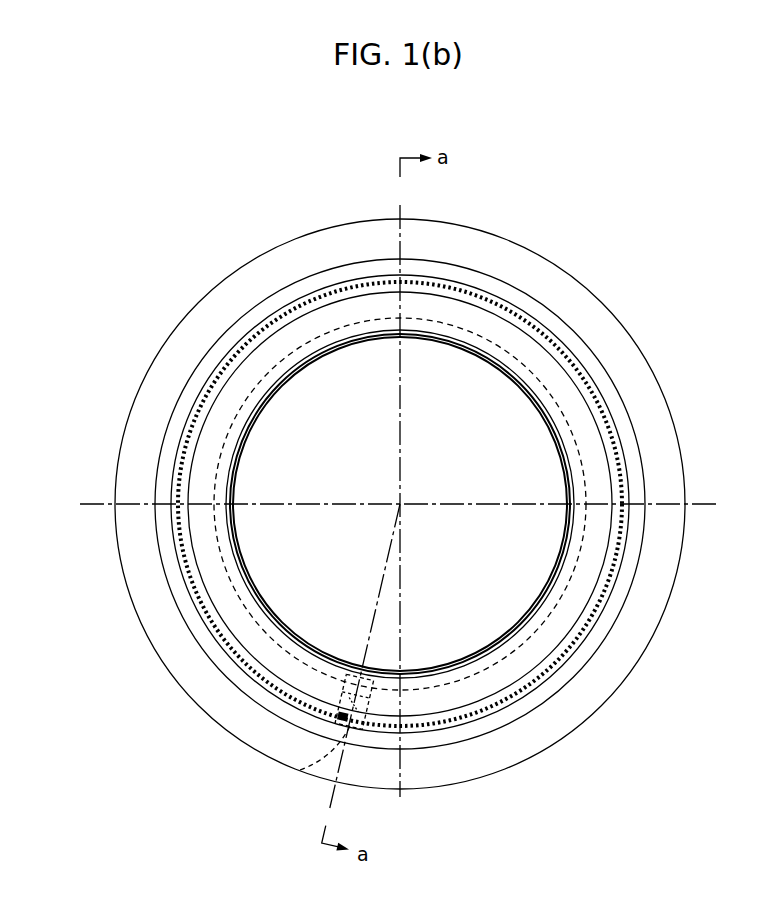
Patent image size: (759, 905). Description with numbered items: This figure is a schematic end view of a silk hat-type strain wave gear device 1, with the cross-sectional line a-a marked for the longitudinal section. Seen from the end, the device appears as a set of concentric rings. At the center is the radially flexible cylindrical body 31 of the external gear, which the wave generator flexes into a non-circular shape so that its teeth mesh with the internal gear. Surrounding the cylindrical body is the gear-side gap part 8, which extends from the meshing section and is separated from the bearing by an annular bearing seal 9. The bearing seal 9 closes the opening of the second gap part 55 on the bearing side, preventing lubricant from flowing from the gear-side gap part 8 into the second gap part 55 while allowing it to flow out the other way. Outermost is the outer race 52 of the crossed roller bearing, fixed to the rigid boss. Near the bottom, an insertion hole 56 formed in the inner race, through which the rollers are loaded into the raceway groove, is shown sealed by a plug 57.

The silk hat-type strain wave gear device 1 is at (508, 204).
The outer race 52 is at (264, 252).
The annular bearing seal 9 is at (260, 309).
The second gap part 55 is at (250, 326).
The gear-side gap part 8 is at (237, 382).
The cylindrical body 31 is at (297, 378).
The insertion hole 56 is at (300, 770).
The plug 57 is at (361, 728).